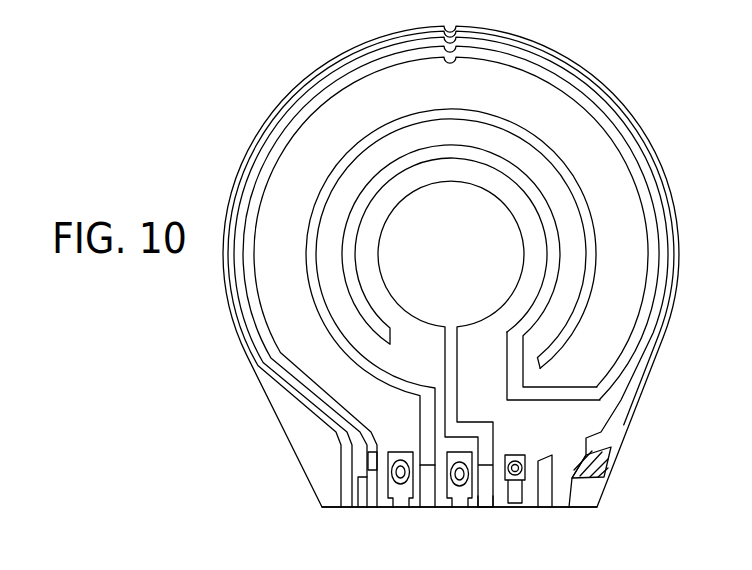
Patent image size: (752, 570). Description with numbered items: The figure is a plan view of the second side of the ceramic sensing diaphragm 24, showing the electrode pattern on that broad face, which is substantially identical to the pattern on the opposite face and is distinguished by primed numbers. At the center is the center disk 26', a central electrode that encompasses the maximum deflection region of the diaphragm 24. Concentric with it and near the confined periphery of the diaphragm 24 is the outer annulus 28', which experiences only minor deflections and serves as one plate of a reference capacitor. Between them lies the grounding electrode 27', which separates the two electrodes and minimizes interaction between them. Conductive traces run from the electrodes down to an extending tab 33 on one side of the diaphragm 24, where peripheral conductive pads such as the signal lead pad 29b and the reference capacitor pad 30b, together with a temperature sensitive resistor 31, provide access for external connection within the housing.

The sensing diaphragm 24 is at (610, 341).
The center disk 26' is at (504, 344).
The grounding electrode 27' is at (482, 272).
The outer annulus 28' is at (453, 308).
The conductive pad 29b is at (484, 498).
The conductive pad 30b is at (428, 498).
The temperature sensitive resistor 31 is at (600, 469).
The extending tab 33 is at (383, 494).